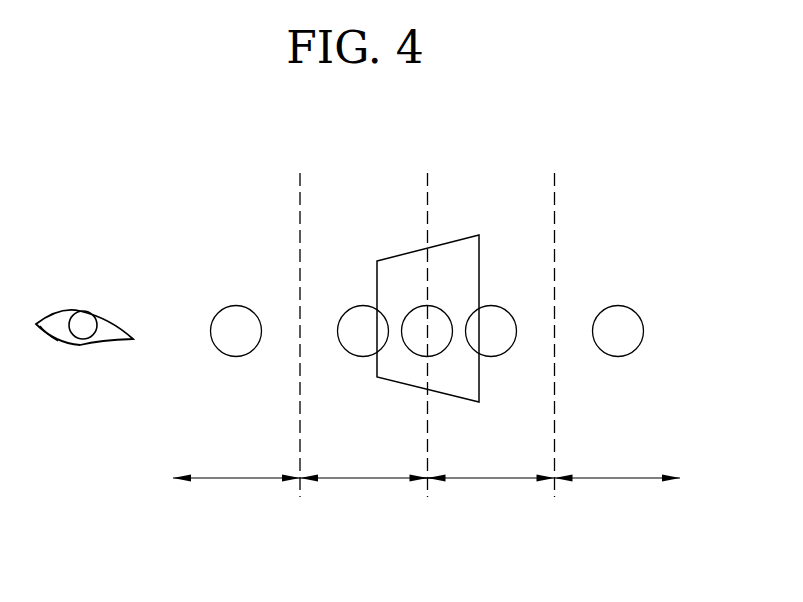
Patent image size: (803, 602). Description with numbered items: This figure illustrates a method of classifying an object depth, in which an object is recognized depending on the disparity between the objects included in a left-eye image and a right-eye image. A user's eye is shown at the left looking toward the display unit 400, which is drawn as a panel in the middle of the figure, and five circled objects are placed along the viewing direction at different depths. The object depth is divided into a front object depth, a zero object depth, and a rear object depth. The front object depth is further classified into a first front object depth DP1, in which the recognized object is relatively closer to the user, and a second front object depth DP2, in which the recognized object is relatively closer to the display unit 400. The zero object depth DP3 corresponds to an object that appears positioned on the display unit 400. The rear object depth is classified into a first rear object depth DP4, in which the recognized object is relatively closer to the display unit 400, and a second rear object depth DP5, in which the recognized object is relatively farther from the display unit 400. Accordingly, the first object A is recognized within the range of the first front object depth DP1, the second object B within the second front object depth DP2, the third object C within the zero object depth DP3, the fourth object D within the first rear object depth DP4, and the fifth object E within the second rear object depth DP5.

The display unit 400 is at (479, 258).
The first object A is at (236, 331).
The second object B is at (363, 331).
The third object C is at (427, 331).
The fourth object D is at (491, 331).
The fifth object E is at (618, 331).
The first front object depth DP1 is at (236, 494).
The second front object depth DP2 is at (364, 494).
The zero object depth DP3 is at (428, 495).
The first rear object depth DP4 is at (491, 494).
The second rear object depth DP5 is at (618, 494).